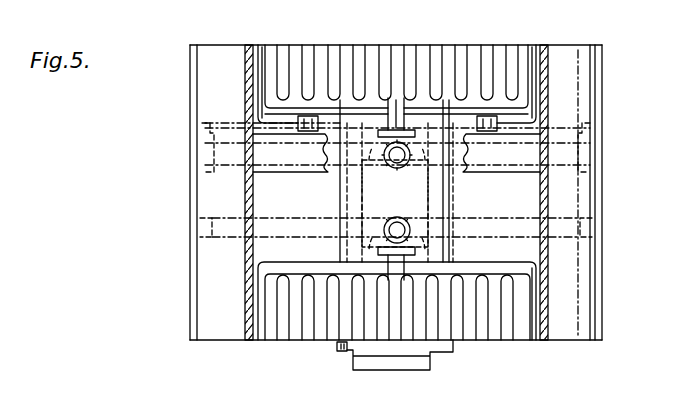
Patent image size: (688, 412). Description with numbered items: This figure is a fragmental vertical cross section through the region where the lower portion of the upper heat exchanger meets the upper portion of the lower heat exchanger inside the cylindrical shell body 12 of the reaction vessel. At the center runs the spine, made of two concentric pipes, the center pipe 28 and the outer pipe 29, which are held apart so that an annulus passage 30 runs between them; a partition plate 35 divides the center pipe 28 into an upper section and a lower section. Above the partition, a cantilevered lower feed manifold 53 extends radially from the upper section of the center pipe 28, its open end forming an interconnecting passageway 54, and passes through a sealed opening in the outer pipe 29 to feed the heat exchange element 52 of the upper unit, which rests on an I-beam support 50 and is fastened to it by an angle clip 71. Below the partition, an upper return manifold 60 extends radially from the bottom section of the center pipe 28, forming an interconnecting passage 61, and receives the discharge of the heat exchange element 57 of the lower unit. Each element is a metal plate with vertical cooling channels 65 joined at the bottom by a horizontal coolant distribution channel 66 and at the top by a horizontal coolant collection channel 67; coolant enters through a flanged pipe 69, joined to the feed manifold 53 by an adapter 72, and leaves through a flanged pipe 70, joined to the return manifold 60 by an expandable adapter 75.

The cylindrical shell body 12 is at (535, 92).
The center pipe 28 is at (345, 196).
The outer pipe 29 is at (345, 178).
The annulus passage 30 is at (337, 347).
The partition plate 35 is at (432, 180).
The I-beam support 50 is at (205, 123).
The heat exchange element 52 is at (527, 75).
The lower feed manifold 53 is at (205, 150).
The interconnecting passageway 54 is at (399, 160).
The heat exchange element 57 is at (520, 338).
The upper return manifold 60 is at (205, 227).
The interconnecting passage 61 is at (396, 218).
The vertical cooling channel 65 is at (349, 47).
The horizontal coolant distribution channel 66 is at (298, 103).
The horizontal coolant collection channel 67 is at (280, 273).
The flanged pipe 69 is at (399, 120).
The flanged pipe 70 is at (397, 265).
The angle clip 71 is at (296, 121).
The adapter 72 is at (411, 146).
The expandable adapter 75 is at (380, 240).